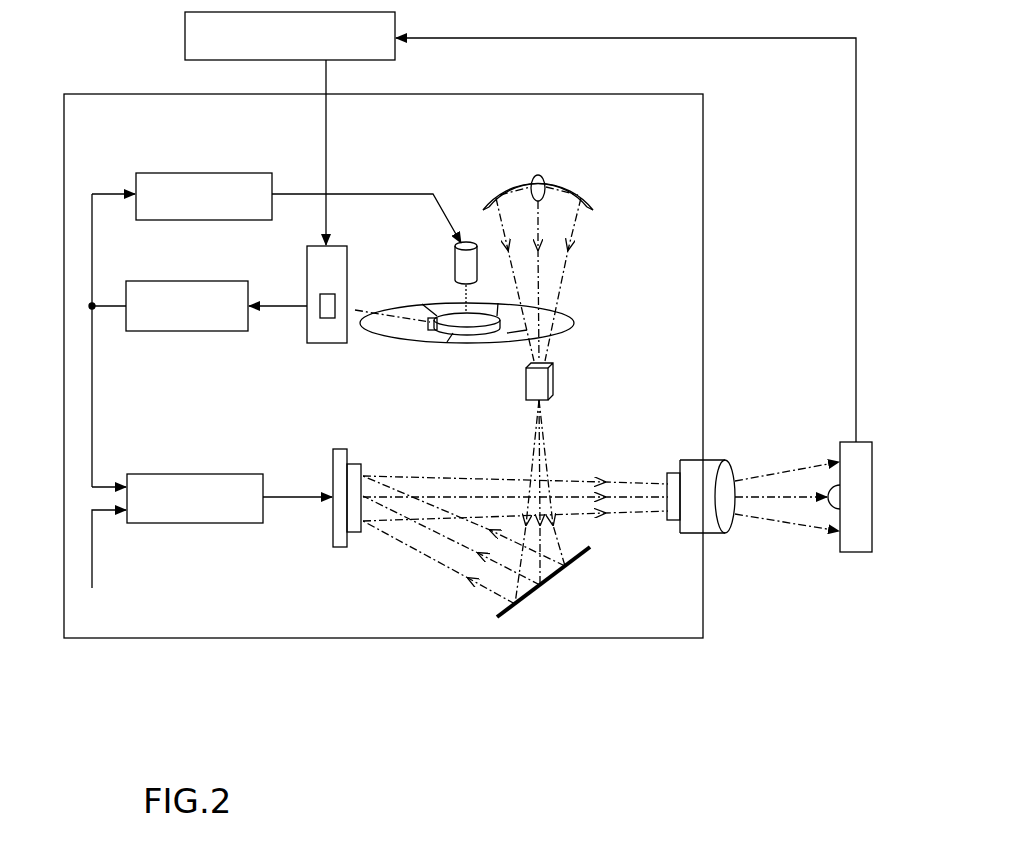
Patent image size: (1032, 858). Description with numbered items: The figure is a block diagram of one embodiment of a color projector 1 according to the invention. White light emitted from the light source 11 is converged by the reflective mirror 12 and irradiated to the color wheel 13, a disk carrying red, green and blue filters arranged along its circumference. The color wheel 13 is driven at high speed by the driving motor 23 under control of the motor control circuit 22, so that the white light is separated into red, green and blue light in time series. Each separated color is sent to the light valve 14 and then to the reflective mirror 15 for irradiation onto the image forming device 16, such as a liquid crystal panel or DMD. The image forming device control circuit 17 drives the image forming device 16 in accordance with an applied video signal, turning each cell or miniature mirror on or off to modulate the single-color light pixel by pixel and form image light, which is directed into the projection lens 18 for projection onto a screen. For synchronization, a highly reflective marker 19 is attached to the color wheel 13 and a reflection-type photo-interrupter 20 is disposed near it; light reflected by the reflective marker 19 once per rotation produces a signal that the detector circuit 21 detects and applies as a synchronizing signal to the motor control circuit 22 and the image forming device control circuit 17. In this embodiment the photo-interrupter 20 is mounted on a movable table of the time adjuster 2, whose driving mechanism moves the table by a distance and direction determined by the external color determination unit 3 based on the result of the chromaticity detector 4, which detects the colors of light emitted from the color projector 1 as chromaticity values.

The color projector 1 is at (155, 639).
The time adjuster 2 is at (339, 246).
The color determination unit 3 is at (353, 62).
The chromaticity detector 4 is at (858, 553).
The light source 11 is at (546, 176).
The reflective mirror 12 is at (590, 198).
The color wheel 13 is at (575, 312).
The light valve 14 is at (552, 386).
The reflective mirror 15 is at (577, 560).
The image forming device 16 is at (340, 449).
The image forming device control circuit 17 is at (150, 525).
The projection lens 18 is at (712, 461).
The reflective marker 19 is at (432, 332).
The reflection-type photo-interrupter 20 is at (328, 318).
The detector circuit 21 is at (149, 281).
The motor control circuit 22 is at (146, 172).
The driving motor 23 is at (455, 263).